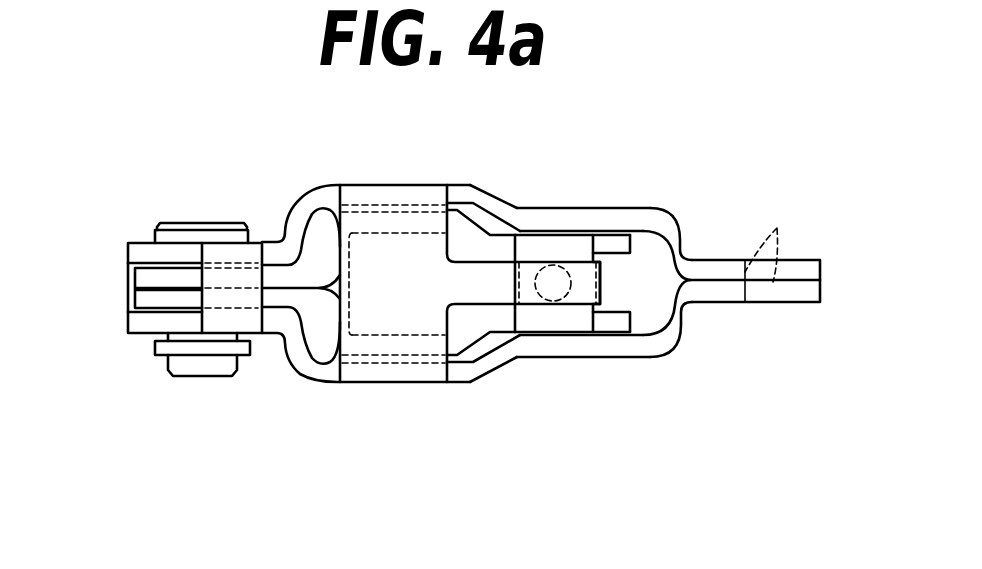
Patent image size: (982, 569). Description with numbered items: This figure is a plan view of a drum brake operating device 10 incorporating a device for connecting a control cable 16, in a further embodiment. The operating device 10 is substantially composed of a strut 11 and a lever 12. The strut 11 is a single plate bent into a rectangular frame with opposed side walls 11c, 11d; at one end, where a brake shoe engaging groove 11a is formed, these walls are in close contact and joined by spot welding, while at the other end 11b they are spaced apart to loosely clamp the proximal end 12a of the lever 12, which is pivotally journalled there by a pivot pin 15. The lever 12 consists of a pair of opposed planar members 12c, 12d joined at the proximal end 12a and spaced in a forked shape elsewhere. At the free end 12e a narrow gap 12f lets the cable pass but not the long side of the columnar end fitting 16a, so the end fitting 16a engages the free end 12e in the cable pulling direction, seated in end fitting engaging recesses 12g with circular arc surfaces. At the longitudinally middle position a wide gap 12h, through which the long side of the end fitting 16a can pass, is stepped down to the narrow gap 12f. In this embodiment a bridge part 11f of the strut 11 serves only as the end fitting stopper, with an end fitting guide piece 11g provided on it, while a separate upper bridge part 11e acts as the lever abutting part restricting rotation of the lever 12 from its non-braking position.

The drum brake operating device 10 is at (140, 362).
The strut 11 is at (699, 339).
The brake shoe engaging groove 11a is at (783, 238).
The other end of the strut 11b is at (135, 255).
The side wall 11c is at (673, 232).
The side wall 11d is at (611, 346).
The upper bridge part 11e is at (250, 257).
The bridge part 11f is at (338, 248).
The end fitting guide piece 11g is at (520, 358).
The lever 12 is at (310, 347).
The proximal end of the lever 12a is at (147, 298).
The planar member 12c is at (480, 238).
The planar member 12d is at (470, 340).
The free end of the lever 12e is at (658, 343).
The narrow gap 12f is at (612, 250).
The end fitting engaging recess 12g is at (568, 237).
The wide gap 12h is at (454, 255).
The pivot pin 15 is at (193, 377).
The control cable 16 is at (575, 250).
The end fitting 16a is at (543, 250).